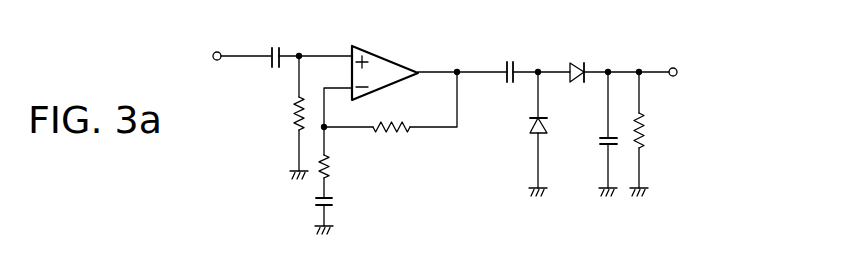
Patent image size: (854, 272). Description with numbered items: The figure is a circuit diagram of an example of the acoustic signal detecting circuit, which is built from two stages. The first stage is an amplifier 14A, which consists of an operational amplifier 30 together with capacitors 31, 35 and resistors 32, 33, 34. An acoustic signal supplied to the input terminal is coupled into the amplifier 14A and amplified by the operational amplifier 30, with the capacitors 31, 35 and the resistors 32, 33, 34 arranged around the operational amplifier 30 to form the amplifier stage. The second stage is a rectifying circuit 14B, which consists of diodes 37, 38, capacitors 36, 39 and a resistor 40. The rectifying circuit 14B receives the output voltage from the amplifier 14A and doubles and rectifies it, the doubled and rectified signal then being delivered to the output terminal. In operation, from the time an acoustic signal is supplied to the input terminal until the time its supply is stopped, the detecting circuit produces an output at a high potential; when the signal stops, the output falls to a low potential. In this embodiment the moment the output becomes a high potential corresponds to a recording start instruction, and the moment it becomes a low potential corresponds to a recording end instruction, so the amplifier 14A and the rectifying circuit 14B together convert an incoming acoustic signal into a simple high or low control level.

The amplifier 14A is at (418, 29).
The rectifying circuit 14B is at (614, 29).
The operational amplifier 30 is at (392, 58).
The capacitor 31 is at (275, 68).
The resistor 32 is at (289, 122).
The resistor 33 is at (402, 132).
The resistor 34 is at (333, 170).
The capacitor 35 is at (333, 198).
The capacitor 36 is at (511, 83).
The diode 37 is at (532, 135).
The diode 38 is at (582, 83).
The capacitor 39 is at (601, 140).
The resistor 40 is at (645, 127).